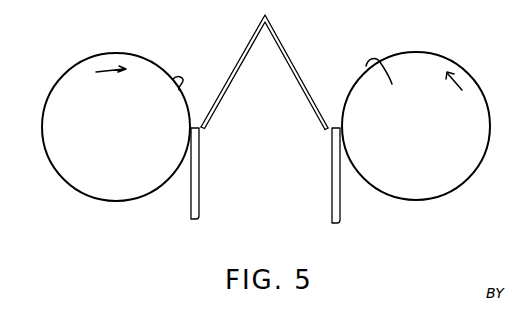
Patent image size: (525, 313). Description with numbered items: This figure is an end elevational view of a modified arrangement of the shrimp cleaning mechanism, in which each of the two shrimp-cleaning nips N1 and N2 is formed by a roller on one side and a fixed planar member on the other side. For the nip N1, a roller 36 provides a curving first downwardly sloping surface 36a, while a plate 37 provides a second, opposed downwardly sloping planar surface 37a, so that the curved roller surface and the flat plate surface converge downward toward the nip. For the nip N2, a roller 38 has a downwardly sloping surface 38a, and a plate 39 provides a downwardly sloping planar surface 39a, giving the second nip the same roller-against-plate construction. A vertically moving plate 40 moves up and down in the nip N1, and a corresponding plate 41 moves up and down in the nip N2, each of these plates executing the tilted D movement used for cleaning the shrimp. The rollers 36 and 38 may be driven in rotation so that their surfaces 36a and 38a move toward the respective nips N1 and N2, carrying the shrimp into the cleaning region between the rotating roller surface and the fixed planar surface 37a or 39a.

The roller 36 is at (82, 74).
The curving first downwardly sloping surface 36a is at (178, 88).
The plate 37 is at (228, 90).
The second opposed downwardly sloping planar surface 37a is at (233, 71).
The roller 38 is at (448, 63).
The downwardly sloping surface 38a is at (393, 88).
The plate 39 is at (313, 126).
The downwardly sloping planar surface 39a is at (296, 62).
The vertically moving plate 40 is at (190, 205).
The plate 41 is at (341, 209).
The nip N1 is at (204, 122).
The nip N2 is at (344, 118).